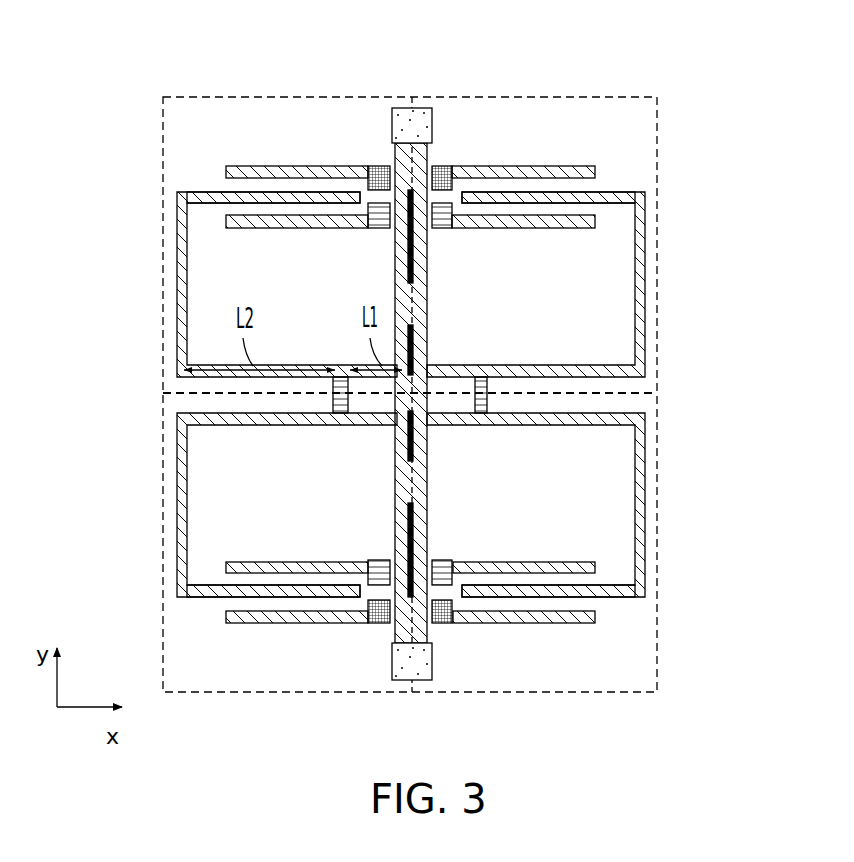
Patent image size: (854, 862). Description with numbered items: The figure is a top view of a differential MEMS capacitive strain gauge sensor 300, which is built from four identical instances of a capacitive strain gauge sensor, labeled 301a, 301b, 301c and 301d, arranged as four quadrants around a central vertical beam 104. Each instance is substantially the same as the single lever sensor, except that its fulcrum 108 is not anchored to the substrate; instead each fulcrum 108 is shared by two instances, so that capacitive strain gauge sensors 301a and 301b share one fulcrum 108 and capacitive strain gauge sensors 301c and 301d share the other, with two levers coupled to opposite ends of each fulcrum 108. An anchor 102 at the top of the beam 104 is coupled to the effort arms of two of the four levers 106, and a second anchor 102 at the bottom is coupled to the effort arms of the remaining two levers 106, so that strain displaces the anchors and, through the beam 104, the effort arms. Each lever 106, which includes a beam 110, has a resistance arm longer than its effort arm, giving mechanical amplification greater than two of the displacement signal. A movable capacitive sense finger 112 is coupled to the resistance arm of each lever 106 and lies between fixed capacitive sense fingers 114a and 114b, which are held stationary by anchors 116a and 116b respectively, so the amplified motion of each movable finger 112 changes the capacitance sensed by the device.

The differential MEMS capacitive strain gauge sensor 300 is at (134, 76).
The capacitive strain gauge sensor 301a is at (158, 212).
The capacitive strain gauge sensor 301b is at (157, 512).
The capacitive strain gauge sensor 301c is at (662, 268).
The capacitive strain gauge sensor 301d is at (660, 478).
The anchor 102 is at (412, 120).
The beam 104 is at (400, 270).
The lever 106 is at (382, 394).
The fulcrum 108 is at (334, 410).
The beam 110 is at (181, 276).
The movable capacitive sense finger 112 is at (271, 197).
The fixed capacitive sense finger 114a is at (266, 223).
The fixed capacitive sense finger 114b is at (326, 169).
The anchor 116a is at (374, 165).
The anchor 116b is at (367, 227).